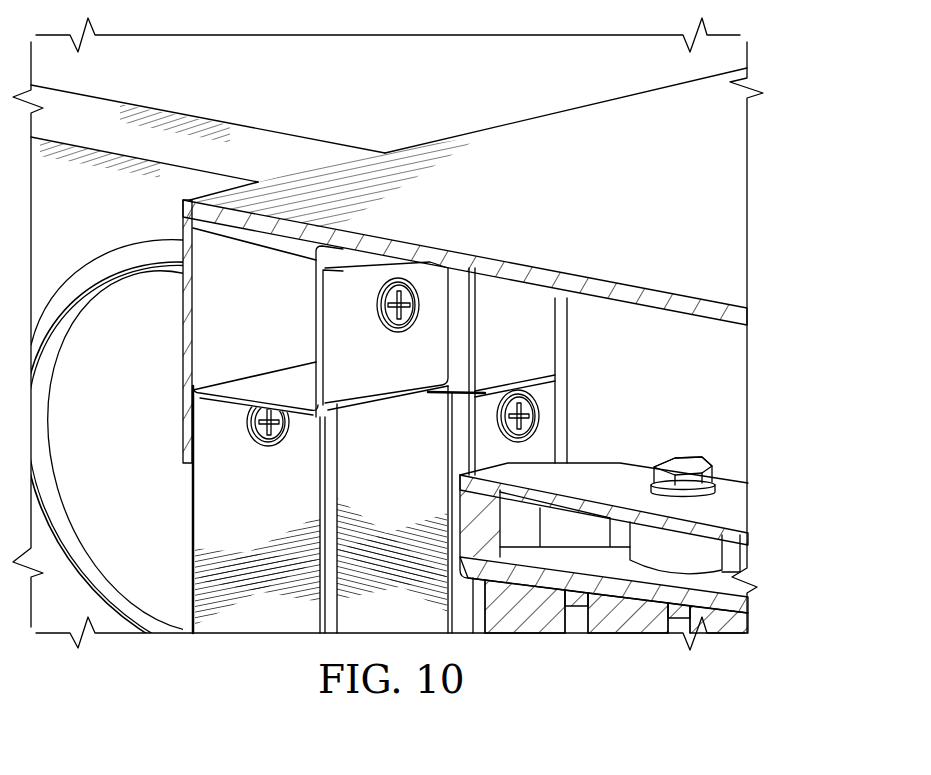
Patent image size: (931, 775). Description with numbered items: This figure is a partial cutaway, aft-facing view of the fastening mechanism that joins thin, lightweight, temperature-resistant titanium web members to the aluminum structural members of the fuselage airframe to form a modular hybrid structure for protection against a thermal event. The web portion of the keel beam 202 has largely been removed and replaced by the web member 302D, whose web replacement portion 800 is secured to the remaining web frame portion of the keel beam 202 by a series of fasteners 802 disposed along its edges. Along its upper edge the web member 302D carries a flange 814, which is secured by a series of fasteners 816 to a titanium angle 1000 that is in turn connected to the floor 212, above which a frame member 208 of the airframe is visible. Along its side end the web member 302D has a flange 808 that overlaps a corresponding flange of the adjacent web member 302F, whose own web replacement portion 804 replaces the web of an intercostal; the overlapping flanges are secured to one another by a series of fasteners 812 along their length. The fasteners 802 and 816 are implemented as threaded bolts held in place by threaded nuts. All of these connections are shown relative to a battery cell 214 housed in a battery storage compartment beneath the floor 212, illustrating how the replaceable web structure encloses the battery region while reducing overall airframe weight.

The frame member 208 is at (267, 143).
The floor 212 is at (515, 137).
The titanium angle 1000 is at (320, 292).
The keel beam 202 is at (182, 348).
The web replacement portion 800 is at (215, 522).
The fastener 802 is at (267, 450).
The web replacement portion 804 is at (543, 438).
The flange 808 is at (412, 420).
The fastener 812 is at (540, 413).
The flange 814 is at (353, 382).
The fastener 816 is at (410, 323).
The battery cell 214 is at (773, 539).
The web member 302D is at (183, 498).
The web member 302F is at (735, 409).